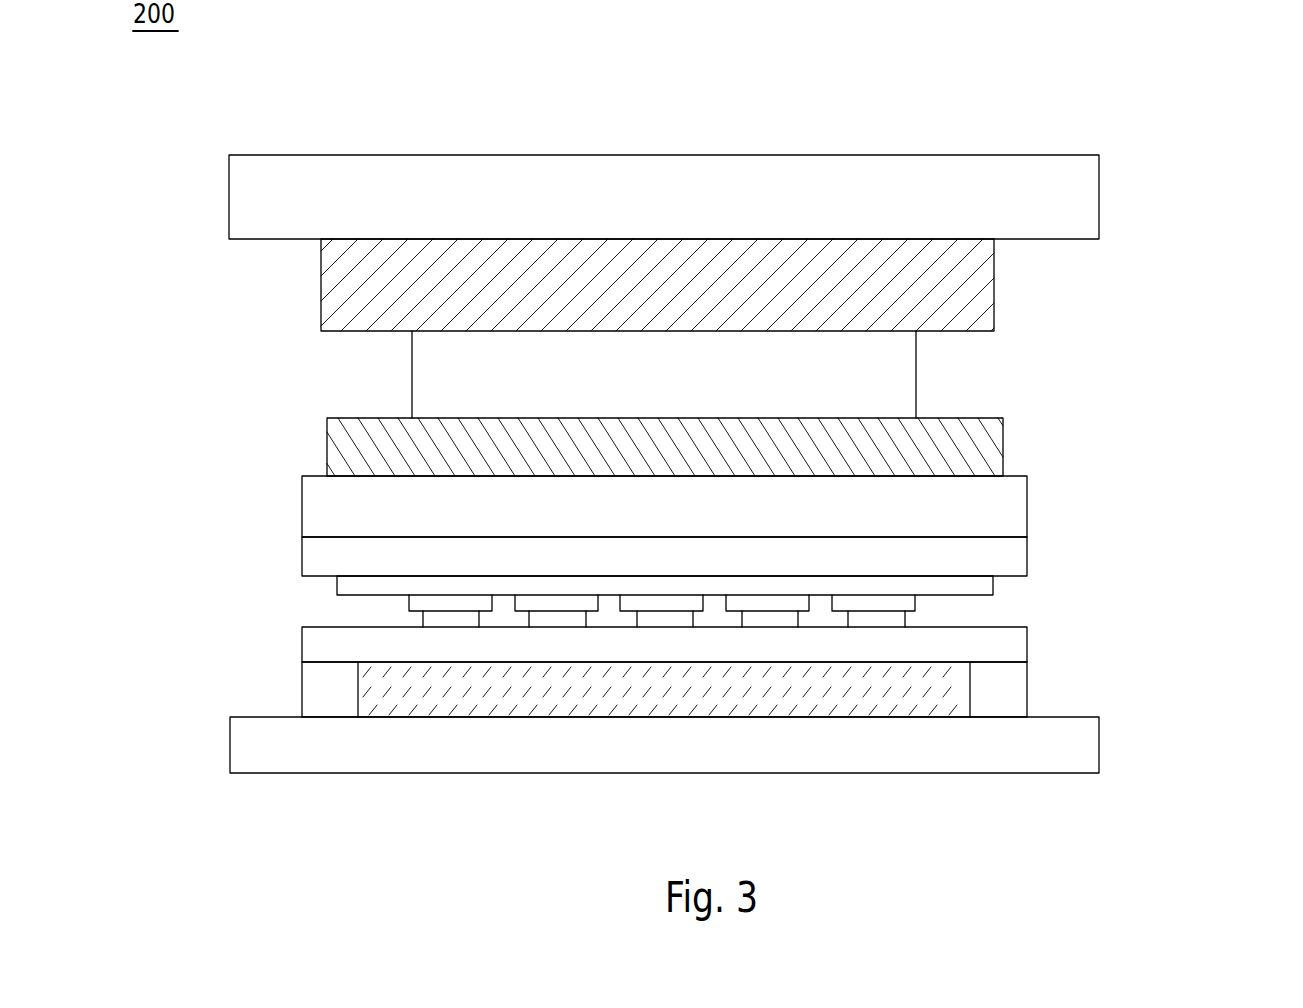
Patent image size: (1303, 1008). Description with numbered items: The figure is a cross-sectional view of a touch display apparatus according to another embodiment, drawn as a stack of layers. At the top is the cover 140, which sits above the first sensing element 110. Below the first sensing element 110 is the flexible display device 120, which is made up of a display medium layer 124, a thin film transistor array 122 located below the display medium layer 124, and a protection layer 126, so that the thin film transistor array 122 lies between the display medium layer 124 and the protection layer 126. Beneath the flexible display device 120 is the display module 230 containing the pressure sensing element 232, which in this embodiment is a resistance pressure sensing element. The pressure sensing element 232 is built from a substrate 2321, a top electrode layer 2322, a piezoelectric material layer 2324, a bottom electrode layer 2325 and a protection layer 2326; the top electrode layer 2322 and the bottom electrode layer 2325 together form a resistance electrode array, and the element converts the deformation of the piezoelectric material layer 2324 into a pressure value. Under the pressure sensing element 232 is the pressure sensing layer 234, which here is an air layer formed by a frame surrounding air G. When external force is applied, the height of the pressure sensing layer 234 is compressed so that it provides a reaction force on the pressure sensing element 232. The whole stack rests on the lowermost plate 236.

The cover 140 is at (1093, 195).
The first sensing element 110 is at (988, 290).
The flexible display device 120 is at (751, 434).
The display medium layer 124 is at (905, 383).
The thin film transistor array 122 is at (1003, 443).
The protection layer 126 is at (717, 506).
The display panel 230 is at (751, 686).
The pressure sensing element 232 is at (752, 610).
The substrate 2321 is at (1023, 555).
The top electrode layer 2322 is at (985, 590).
The piezoelectric material layer 2324 is at (910, 602).
The bottom electrode layer 2325 is at (905, 613).
The protection layer 2326 is at (717, 660).
The pressure sensing layer 234 is at (1005, 700).
The back plate 236 is at (717, 745).
The air G is at (746, 709).